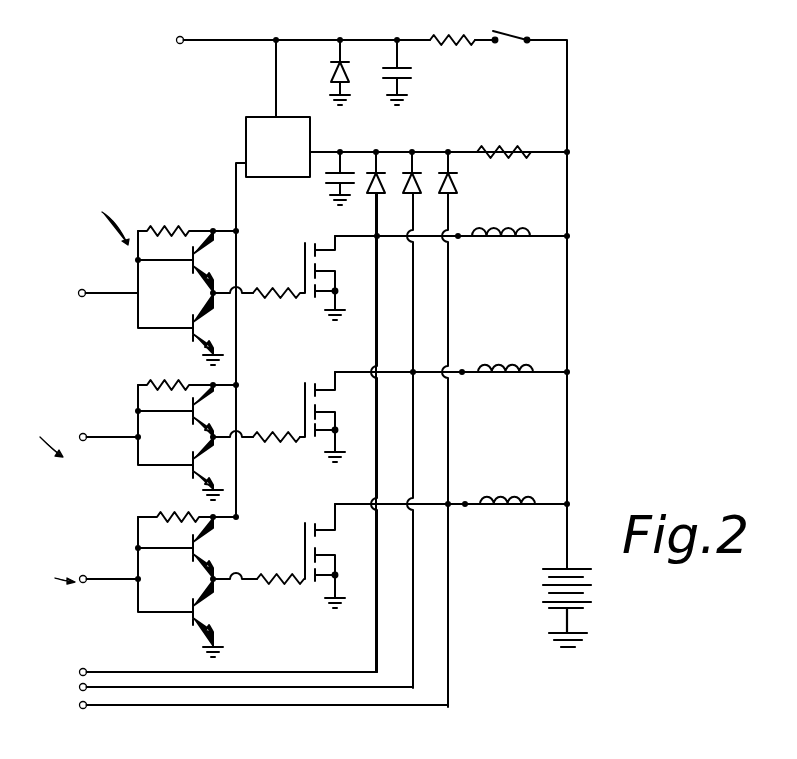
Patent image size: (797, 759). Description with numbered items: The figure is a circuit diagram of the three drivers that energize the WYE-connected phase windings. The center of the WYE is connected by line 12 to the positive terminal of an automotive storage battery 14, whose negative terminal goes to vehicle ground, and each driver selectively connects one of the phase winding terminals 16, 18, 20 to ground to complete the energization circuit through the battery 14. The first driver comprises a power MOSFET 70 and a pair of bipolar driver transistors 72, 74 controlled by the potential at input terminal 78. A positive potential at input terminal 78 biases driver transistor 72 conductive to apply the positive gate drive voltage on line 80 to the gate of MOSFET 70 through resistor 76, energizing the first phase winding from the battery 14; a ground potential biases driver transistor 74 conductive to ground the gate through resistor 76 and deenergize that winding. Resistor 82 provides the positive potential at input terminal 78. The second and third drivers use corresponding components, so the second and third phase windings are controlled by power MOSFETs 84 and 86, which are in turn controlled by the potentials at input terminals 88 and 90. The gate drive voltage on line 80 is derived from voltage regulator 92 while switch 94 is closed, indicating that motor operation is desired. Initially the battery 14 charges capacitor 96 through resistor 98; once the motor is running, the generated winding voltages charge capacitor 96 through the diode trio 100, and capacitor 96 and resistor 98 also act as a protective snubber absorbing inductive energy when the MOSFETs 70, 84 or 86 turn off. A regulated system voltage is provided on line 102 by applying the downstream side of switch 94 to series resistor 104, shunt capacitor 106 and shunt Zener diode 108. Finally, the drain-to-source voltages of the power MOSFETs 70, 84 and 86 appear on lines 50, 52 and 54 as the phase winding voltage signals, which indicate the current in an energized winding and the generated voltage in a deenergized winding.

The line 102 is at (222, 40).
The series resistor 104 is at (452, 40).
The switch 94 is at (510, 37).
The shunt Zener diode 108 is at (330, 62).
The shunt capacitor 106 is at (411, 76).
The voltage regulator 92 is at (246, 142).
The resistor 98 is at (500, 148).
The diode trio 100 is at (462, 185).
The capacitor 96 is at (326, 178).
The line 80 is at (236, 205).
The input terminal 90 is at (82, 293).
The power MOSFET 86 is at (325, 265).
The phase winding terminal 20 is at (460, 238).
The resistor 82 is at (168, 385).
The power MOSFET 70 is at (320, 388).
The phase winding terminal 16 is at (462, 375).
The input terminal 78 is at (83, 440).
The driver transistor 72 is at (198, 414).
The driver transistor 74 is at (195, 468).
The resistor 76 is at (278, 440).
The line 12 is at (567, 530).
The power MOSFET 84 is at (328, 552).
The phase winding terminal 18 is at (465, 507).
The automotive storage battery 14 is at (543, 572).
The input terminal 88 is at (83, 582).
The line 54 is at (295, 645).
The line 50 is at (178, 687).
The line 52 is at (340, 707).